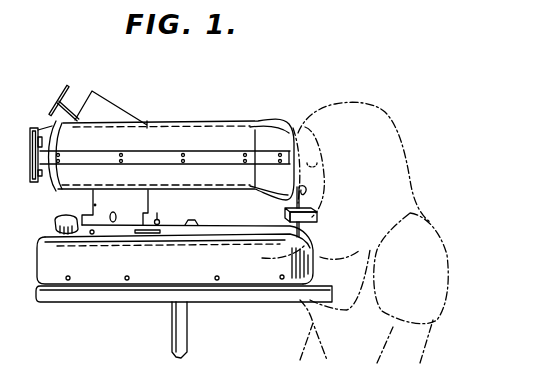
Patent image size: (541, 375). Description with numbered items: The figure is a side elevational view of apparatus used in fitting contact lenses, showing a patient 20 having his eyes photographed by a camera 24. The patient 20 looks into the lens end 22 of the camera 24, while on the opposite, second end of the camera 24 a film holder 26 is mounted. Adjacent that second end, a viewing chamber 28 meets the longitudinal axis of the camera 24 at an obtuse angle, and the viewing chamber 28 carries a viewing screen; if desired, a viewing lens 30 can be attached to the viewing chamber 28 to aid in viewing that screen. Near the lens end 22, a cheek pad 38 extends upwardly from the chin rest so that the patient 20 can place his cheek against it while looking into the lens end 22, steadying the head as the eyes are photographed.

The patient 20 is at (373, 120).
The lens end 22 is at (291, 133).
The camera 24 is at (192, 146).
The film holder 26 is at (52, 183).
The viewing chamber 28 is at (110, 115).
The viewing lens 30 is at (55, 98).
The cheek pad 38 is at (283, 210).